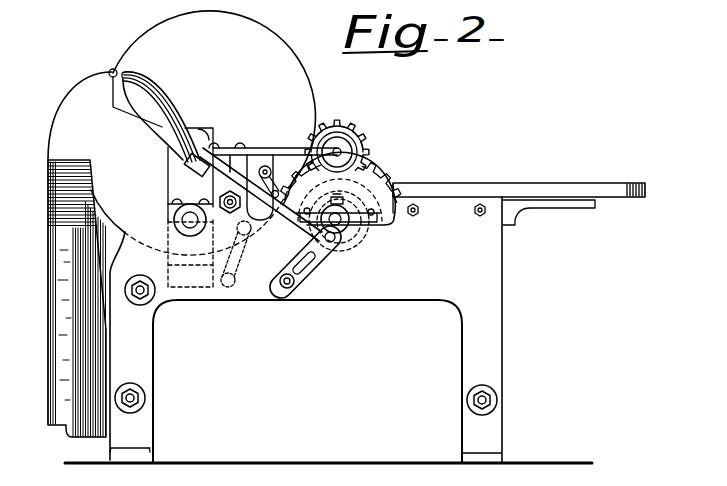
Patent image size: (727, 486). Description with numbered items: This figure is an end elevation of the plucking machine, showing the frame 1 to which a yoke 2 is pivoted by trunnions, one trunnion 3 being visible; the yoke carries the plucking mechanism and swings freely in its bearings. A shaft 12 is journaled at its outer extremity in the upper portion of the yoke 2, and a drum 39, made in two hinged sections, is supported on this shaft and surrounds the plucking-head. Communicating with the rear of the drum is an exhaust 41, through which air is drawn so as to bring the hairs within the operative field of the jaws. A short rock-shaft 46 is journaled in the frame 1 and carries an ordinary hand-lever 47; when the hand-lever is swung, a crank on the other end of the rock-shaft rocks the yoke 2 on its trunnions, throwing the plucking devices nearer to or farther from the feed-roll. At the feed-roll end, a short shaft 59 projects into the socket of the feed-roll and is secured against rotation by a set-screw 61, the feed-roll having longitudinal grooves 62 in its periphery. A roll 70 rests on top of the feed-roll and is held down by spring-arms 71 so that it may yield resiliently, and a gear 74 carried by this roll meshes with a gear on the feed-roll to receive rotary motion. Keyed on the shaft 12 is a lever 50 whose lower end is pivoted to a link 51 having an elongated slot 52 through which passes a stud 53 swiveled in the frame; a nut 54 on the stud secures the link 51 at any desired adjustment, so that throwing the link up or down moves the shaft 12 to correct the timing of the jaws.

The frame 1 is at (405, 292).
The yoke 2 is at (175, 172).
The trunnion 3 is at (188, 219).
The shaft 12 is at (195, 142).
The drum 39 is at (203, 133).
The exhaust 41 is at (93, 358).
The rock-shaft 46 is at (240, 228).
The hand-lever 47 is at (168, 127).
The lever 50 is at (224, 166).
The link 51 is at (340, 268).
The elongated slot 52 is at (280, 294).
The stud 53 is at (290, 293).
The nut 54 is at (303, 278).
The short shaft 59 is at (348, 224).
The set-screw 61 is at (352, 186).
The longitudinal grooves 62 is at (370, 187).
The roll 70 is at (338, 140).
The spring-arms 71 is at (285, 148).
The gear 74 is at (353, 130).